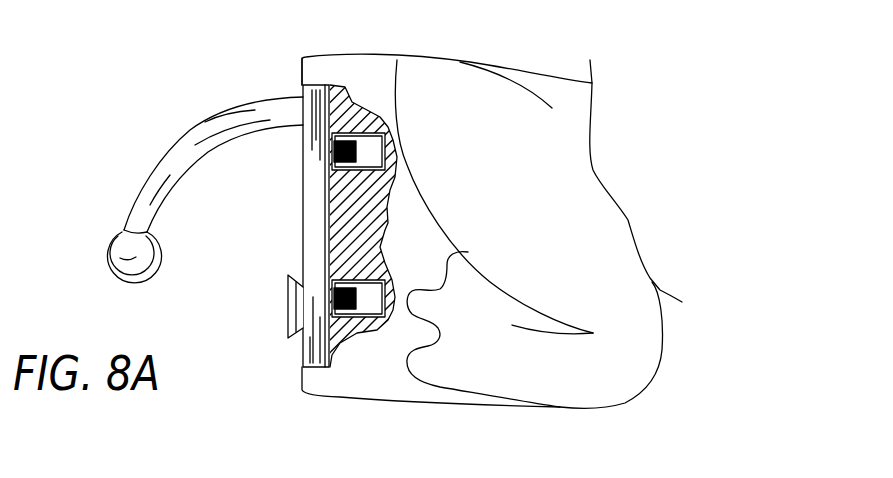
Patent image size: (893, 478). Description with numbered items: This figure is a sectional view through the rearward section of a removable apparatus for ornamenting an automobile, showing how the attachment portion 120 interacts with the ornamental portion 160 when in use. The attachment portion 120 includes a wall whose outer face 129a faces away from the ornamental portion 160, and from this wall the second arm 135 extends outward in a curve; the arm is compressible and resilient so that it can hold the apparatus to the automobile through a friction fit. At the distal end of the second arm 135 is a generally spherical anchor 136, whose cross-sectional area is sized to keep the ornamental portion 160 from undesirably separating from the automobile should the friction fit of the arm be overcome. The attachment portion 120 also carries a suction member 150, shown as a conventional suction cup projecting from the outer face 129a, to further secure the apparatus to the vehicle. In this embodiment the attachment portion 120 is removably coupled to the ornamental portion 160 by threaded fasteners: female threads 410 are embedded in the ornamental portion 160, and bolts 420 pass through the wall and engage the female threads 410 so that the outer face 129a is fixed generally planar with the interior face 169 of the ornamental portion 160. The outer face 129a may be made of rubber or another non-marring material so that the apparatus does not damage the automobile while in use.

The attachment portion 120 is at (163, 136).
The second arm 135 is at (133, 161).
The anchor 136 is at (110, 248).
The interior face 169 is at (300, 74).
The outer face 129a is at (302, 206).
The suction member 150 is at (287, 308).
The female threads 410 is at (355, 131).
The bolts 420 is at (396, 146).
The ornamental portion 160 is at (547, 72).